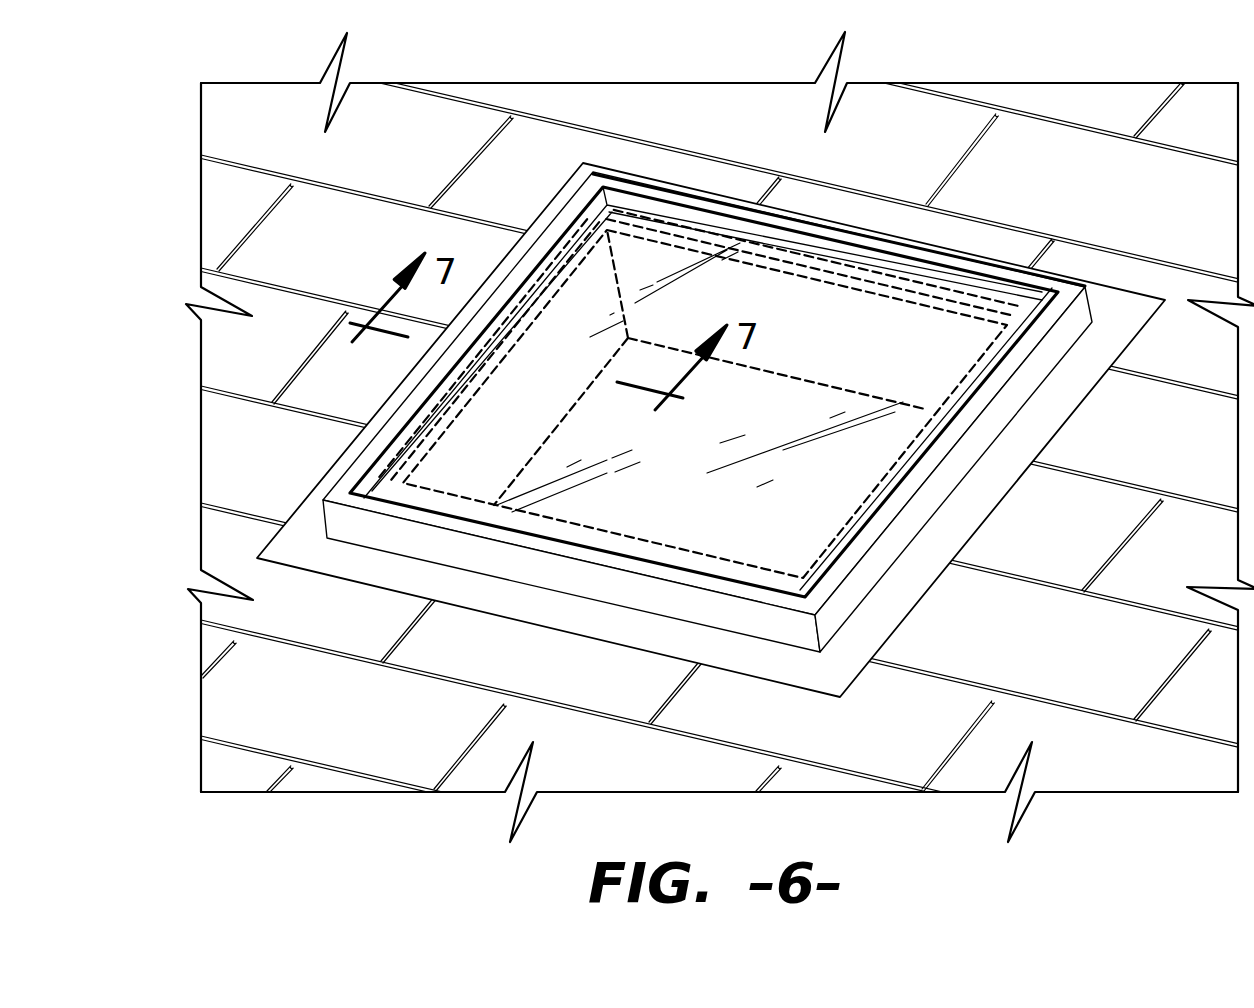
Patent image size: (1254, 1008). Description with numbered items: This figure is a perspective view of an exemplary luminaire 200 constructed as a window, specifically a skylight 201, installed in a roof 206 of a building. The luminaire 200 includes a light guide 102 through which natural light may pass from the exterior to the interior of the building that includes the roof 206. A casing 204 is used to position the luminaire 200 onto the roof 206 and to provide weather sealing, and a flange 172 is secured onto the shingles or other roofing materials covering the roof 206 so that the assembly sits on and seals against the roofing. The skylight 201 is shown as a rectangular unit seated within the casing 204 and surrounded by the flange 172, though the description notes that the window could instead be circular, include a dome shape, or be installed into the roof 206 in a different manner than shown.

The roof 206 is at (608, 98).
The flange 172 is at (898, 583).
The casing 204 is at (1069, 292).
The luminaire 200 is at (937, 237).
The skylight 201 is at (648, 272).
The light guide 102 is at (692, 522).